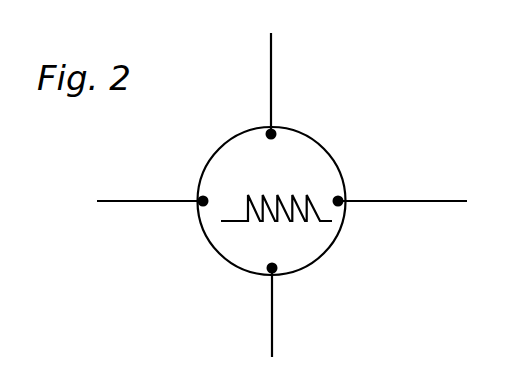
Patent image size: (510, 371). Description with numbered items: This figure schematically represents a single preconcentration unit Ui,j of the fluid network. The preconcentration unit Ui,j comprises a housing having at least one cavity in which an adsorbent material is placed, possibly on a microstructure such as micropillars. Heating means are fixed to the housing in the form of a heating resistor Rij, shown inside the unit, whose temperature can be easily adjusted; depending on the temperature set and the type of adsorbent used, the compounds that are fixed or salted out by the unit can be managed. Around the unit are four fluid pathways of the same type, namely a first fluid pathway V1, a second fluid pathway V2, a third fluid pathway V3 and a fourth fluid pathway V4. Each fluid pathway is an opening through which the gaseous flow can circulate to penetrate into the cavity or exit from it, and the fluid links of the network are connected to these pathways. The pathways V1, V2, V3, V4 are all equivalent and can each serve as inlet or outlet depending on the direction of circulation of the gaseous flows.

The preconcentration unit Ui,j is at (318, 138).
The first fluid pathway V1 is at (285, 86).
The second fluid pathway V2 is at (400, 189).
The third fluid pathway V3 is at (288, 310).
The fourth fluid pathway V4 is at (153, 188).
The heating resistor Rij is at (238, 222).